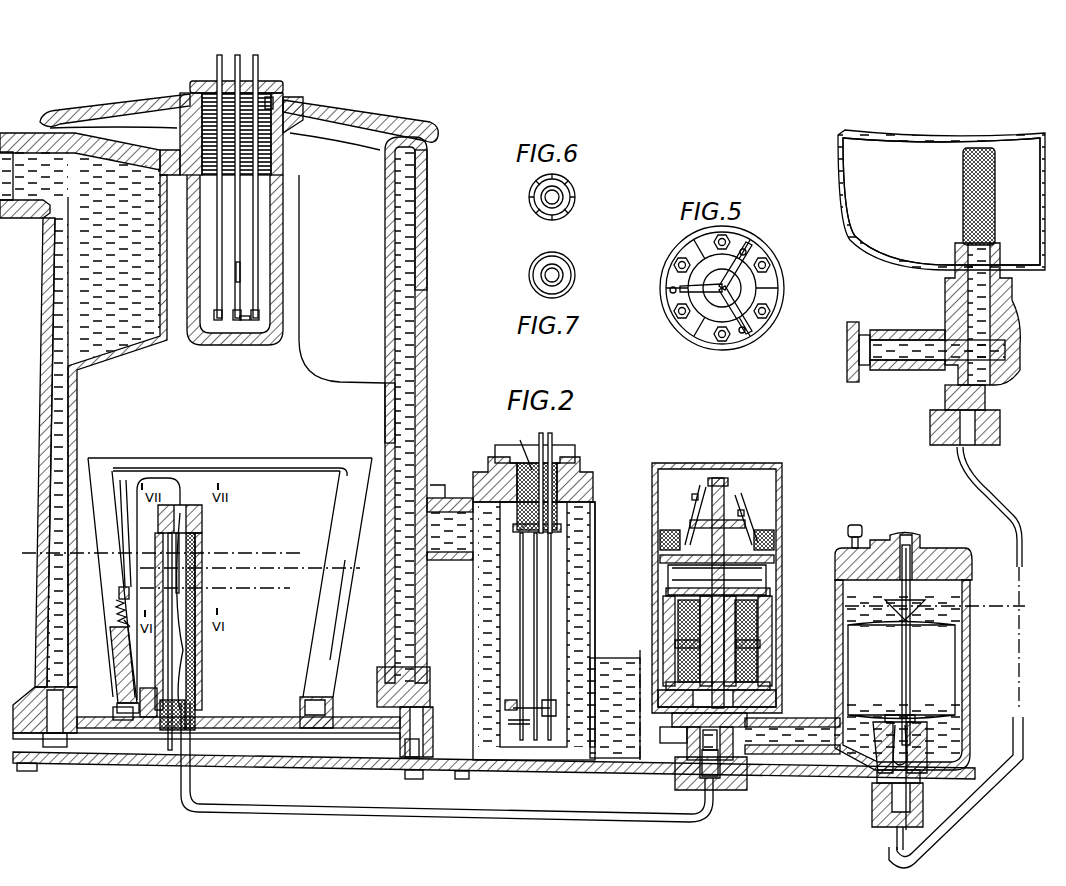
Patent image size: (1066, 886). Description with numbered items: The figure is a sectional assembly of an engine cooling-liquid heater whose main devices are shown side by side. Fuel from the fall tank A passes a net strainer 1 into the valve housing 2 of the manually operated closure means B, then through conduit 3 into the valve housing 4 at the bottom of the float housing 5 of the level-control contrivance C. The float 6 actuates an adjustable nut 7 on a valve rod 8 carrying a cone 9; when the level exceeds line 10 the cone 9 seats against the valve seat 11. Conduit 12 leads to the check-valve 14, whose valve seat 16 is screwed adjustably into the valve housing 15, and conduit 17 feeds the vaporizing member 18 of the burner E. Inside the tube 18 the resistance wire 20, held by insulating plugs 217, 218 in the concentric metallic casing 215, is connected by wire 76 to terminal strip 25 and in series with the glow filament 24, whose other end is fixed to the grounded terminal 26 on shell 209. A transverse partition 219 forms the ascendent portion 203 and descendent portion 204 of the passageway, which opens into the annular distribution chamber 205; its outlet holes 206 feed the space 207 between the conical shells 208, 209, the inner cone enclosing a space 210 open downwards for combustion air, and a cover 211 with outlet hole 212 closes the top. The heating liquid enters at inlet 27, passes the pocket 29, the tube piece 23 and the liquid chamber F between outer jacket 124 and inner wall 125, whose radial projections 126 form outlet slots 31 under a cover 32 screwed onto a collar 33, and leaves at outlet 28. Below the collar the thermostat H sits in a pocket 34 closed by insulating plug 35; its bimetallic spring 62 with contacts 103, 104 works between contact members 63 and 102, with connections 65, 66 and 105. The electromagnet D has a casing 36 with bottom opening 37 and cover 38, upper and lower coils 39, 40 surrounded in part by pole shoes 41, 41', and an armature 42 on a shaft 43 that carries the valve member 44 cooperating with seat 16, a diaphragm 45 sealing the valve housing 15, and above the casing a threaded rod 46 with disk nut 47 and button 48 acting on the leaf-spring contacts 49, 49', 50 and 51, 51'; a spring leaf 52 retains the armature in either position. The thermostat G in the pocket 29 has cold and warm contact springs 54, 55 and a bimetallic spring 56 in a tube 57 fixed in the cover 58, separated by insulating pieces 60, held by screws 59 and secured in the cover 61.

In FIG. 2, the net strainer 1 is at (995, 160).
In FIG. 2, the valve housing 2 is at (1022, 340).
In FIG. 2, the conduit 3 is at (1025, 541).
In FIG. 2, the valve housing 4 is at (872, 805).
In FIG. 2, the float housing 5 is at (970, 665).
In FIG. 2, the float 6 is at (958, 645).
In FIG. 2, the nut 7 is at (897, 605).
In FIG. 2, the valve rod 8 is at (908, 593).
In FIG. 2, the cone 9 is at (915, 755).
In FIG. 2, the line 10 is at (296, 588).
In FIG. 2, the valve seat 11 is at (925, 720).
In FIG. 2, the conduit 12 is at (812, 760).
In FIG. 2, the check-valve 14 is at (662, 734).
In FIG. 2, the valve housing 15 is at (680, 790).
In FIG. 2, the valve seat 16 is at (740, 792).
In FIG. 2, the conduit 17 is at (566, 812).
In FIG. 2, the vaporizing member 18 is at (202, 652).
In FIG. 2, the resistance wire 20 is at (180, 600).
In FIG. 2, the tube piece 23 is at (450, 510).
In FIG. 2, the glow filament 24 is at (113, 612).
In FIG. 2, the terminal strip 25 is at (122, 590).
In FIG. 2, the grounded terminal 26 is at (120, 625).
In FIG. 2, the inlet 27 is at (606, 660).
In FIG. 2, the outlet 28 is at (10, 150).
In FIG. 2, the pocket 29 is at (596, 550).
In FIG. 2, the outlet slots 31 is at (333, 150).
In FIG. 2, the cover 32 is at (345, 105).
In FIG. 2, the screw-threaded collar 33 is at (300, 100).
In FIG. 2, the pocket 34 is at (188, 262).
In FIG. 2, the electric insulating plug 35 is at (192, 86).
In FIG. 2, the casing 36 is at (770, 612).
In FIG. 2, the bottom opening 37 is at (758, 688).
In FIG. 2, the cover 38 is at (770, 558).
In FIG. 2, the upper electromagnet coil 39 is at (748, 605).
In FIG. 2, the lower electromagnet coil 40 is at (760, 662).
In FIG. 2, the pole shoe 41 is at (642, 641).
In FIG. 2, the pole shoe 41' is at (665, 637).
In FIG. 2, the armature 42 is at (738, 652).
In FIG. 2, the shaft 43 is at (668, 590).
In FIG. 2, the valve member 44 is at (776, 704).
In FIG. 2, the diaphragm 45 is at (645, 700).
In FIG. 2, the threaded rod 46 is at (702, 535).
In FIG. 2, the disk nut 47 is at (753, 540).
In FIG. 2, the button 48 is at (722, 480).
In FIG. 2, the contact 49 is at (748, 510).
In FIG. 5, the contact 49 is at (755, 327).
In FIG. 2, the contact 49' is at (755, 504).
In FIG. 5, the contact 50 is at (750, 248).
In FIG. 2, the contact 51 is at (688, 492).
In FIG. 5, the contact 51 is at (665, 290).
In FIG. 2, the contact 51' is at (664, 494).
In FIG. 2, the spring leaf 52 is at (668, 572).
In FIG. 2, the contact spring 54 is at (520, 607).
In FIG. 2, the contact spring 55 is at (535, 622).
In FIG. 2, the bimetallic spring 56 is at (548, 650).
In FIG. 2, the tube 57 is at (505, 672).
In FIG. 2, the cover 58 is at (593, 486).
In FIG. 2, the screws 59 is at (557, 527).
In FIG. 2, the insulating pieces 60 is at (557, 514).
In FIG. 2, the cover 61 is at (575, 476).
In FIG. 2, the bimetallic spring 62 is at (240, 270).
In FIG. 2, the contact member 63 is at (258, 313).
In FIG. 2, the connection 65 is at (258, 72).
In FIG. 2, the connection 66 is at (265, 62).
In FIG. 2, the wire 76 is at (136, 505).
In FIG. 2, the contact member 102 is at (212, 322).
In FIG. 2, the contact 103 is at (243, 322).
In FIG. 2, the contact 104 is at (232, 322).
In FIG. 2, the connection 105 is at (217, 70).
In FIG. 2, the outer jacket 124 is at (427, 292).
In FIG. 2, the inner wall 125 is at (384, 413).
In FIG. 2, the radial projections 126 is at (325, 360).
In FIG. 2, the ascendent portion 203 is at (195, 570).
In FIG. 6, the ascendent portion 203 is at (574, 196).
In FIG. 2, the descendent portion 204 is at (172, 552).
In FIG. 6, the descendent portion 204 is at (538, 206).
In FIG. 2, the distribution chamber 205 is at (335, 715).
In FIG. 2, the outlet holes 206 is at (118, 705).
In FIG. 2, the space 207 is at (336, 636).
In FIG. 2, the shell 208 is at (118, 690).
In FIG. 2, the shell 209 is at (130, 645).
In FIG. 2, the space 210 is at (297, 485).
In FIG. 2, the cover 211 is at (160, 460).
In FIG. 2, the outlet hole 212 is at (228, 468).
In FIG. 2, the metallic casing 215 is at (196, 676).
In FIG. 2, the insulating plug 217 is at (202, 525).
In FIG. 2, the insulating plug 218 is at (188, 707).
In FIG. 6, the transverse partition 219 is at (535, 182).
In FIG. 2, the container A is at (838, 152).
In FIG. 2, the closure means B is at (1008, 382).
In FIG. 2, the contrivance C is at (968, 548).
In FIG. 2, the electromagnet D is at (787, 470).
In FIG. 2, the burner E is at (353, 609).
In FIG. 2, the boiler F is at (427, 355).
In FIG. 2, the thermostat G is at (583, 455).
In FIG. 2, the thermostat H is at (286, 253).